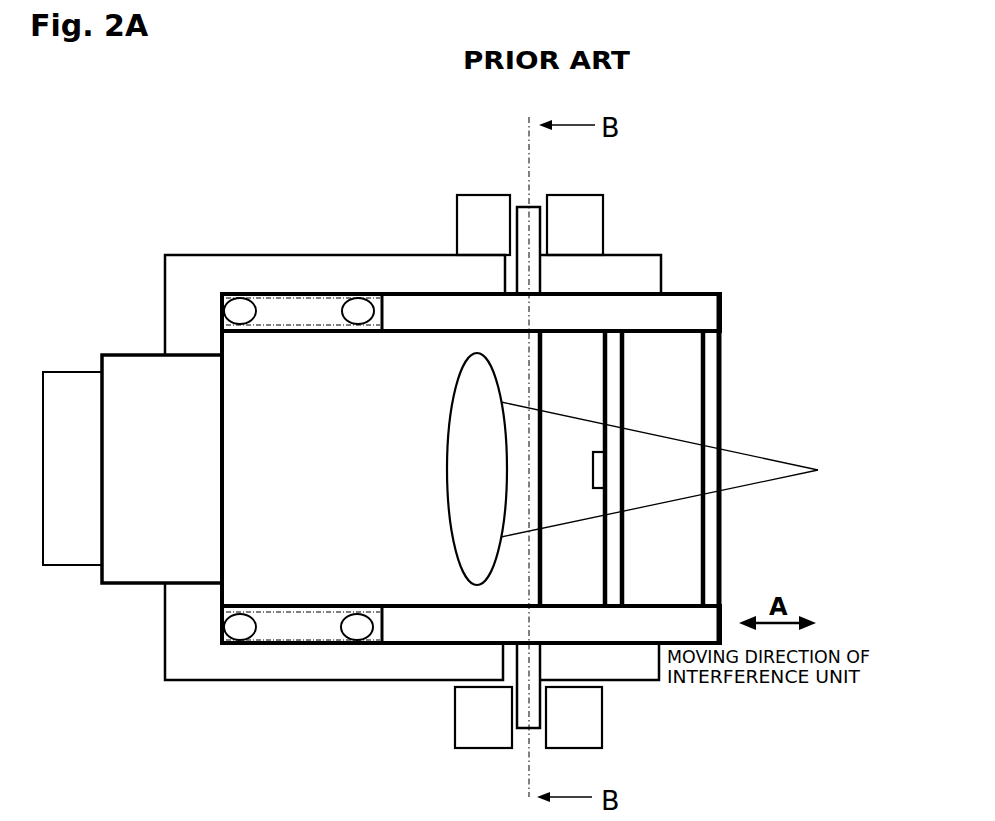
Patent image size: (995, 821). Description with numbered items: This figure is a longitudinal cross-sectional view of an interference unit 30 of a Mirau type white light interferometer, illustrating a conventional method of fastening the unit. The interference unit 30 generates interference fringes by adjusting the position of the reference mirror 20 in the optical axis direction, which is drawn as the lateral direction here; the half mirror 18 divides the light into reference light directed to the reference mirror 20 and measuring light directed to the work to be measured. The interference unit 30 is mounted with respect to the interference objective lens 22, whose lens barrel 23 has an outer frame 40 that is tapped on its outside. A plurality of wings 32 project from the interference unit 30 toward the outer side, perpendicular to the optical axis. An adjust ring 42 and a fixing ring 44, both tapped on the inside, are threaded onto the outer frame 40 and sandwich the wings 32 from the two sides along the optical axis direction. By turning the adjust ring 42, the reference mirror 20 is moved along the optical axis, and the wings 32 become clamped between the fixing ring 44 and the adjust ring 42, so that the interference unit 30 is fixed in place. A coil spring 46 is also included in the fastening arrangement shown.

The half mirror 18 is at (721, 579).
The reference mirror 20 is at (592, 458).
The interference objective lens 22 is at (450, 503).
The lens barrel 23 is at (285, 397).
The interference unit 30 is at (435, 313).
The wing 32 is at (523, 205).
The outer frame 40 is at (298, 273).
The adjust ring 42 is at (475, 233).
The fixing ring 44 is at (580, 217).
The coil spring 46 is at (292, 627).